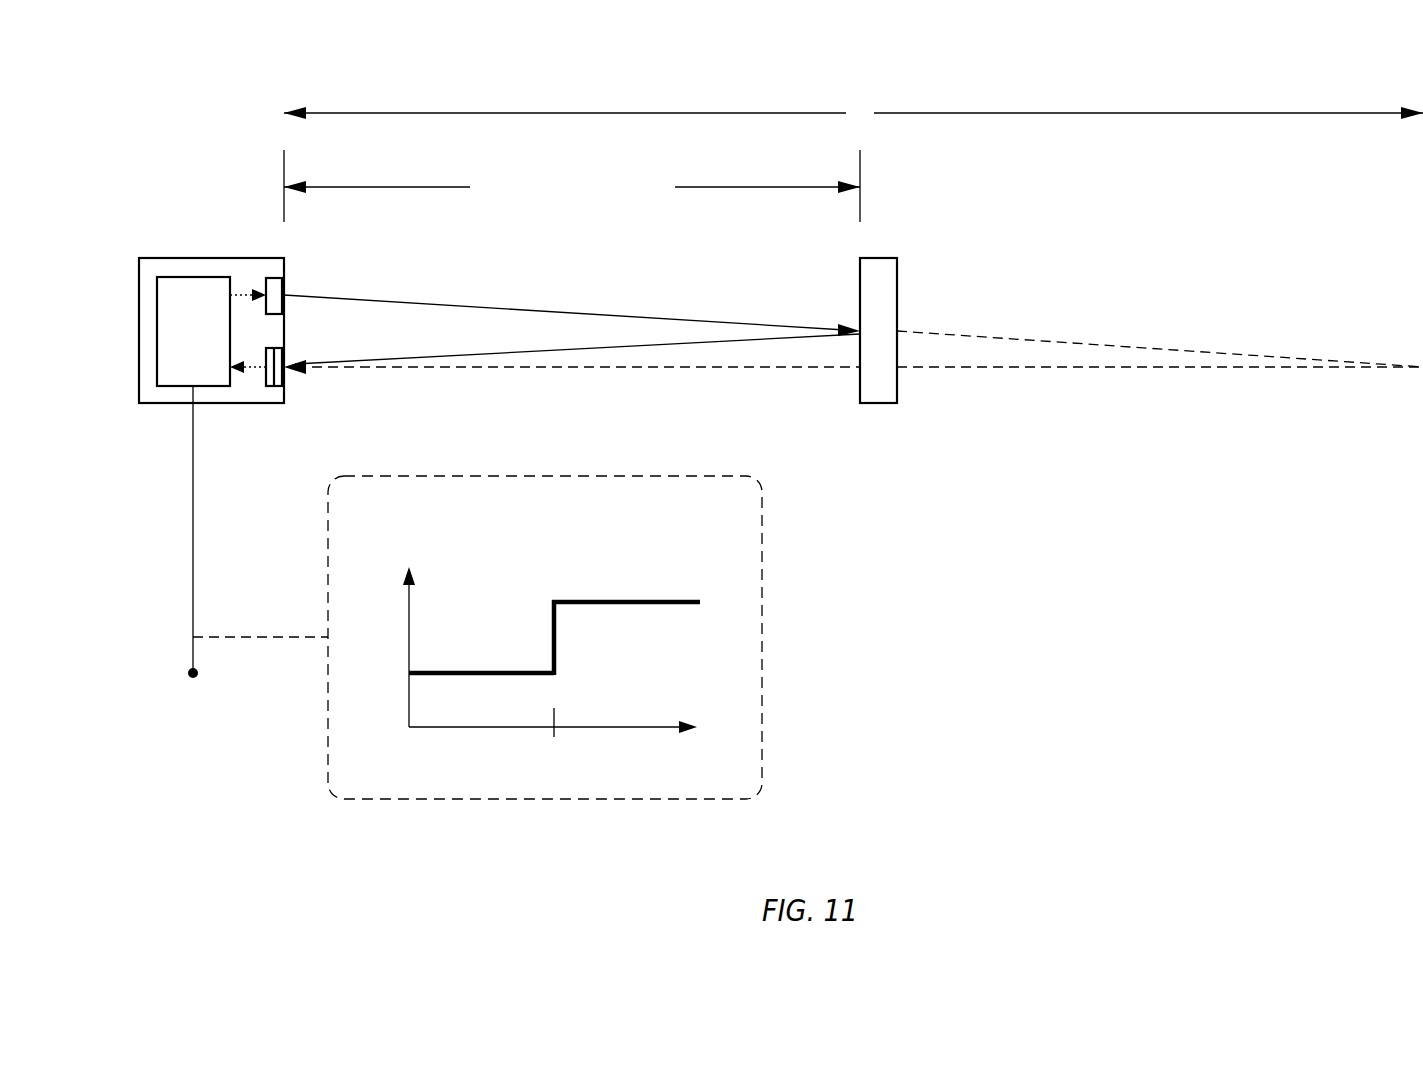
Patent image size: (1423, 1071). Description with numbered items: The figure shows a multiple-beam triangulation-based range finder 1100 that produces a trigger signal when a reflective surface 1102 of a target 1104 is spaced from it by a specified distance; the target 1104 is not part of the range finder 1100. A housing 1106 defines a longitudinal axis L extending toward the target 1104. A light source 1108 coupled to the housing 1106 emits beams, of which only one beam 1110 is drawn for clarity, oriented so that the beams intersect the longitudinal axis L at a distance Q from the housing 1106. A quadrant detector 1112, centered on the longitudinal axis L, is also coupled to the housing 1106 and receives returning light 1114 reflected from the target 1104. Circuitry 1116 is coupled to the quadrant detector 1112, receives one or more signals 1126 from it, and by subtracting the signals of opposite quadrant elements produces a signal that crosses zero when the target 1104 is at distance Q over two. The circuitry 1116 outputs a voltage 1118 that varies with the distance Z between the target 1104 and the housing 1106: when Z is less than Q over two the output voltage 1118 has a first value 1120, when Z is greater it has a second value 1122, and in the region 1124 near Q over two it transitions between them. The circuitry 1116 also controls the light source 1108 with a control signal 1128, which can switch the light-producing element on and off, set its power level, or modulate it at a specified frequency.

The range finder 1100 is at (158, 100).
The reflective surface 1102 is at (860, 384).
The target 1104 is at (897, 297).
The housing 1106 is at (160, 258).
The light source 1108 is at (276, 278).
The beam 1110 is at (494, 307).
The quadrant detector 1112 is at (272, 386).
The returning light 1114 is at (488, 360).
The circuitry 1116 is at (156, 330).
The output voltage 1118 is at (193, 546).
The first value 1120 is at (454, 671).
The second value 1122 is at (624, 600).
The transition region 1124 is at (552, 614).
The signal 1126 is at (252, 370).
The control signal 1128 is at (250, 292).